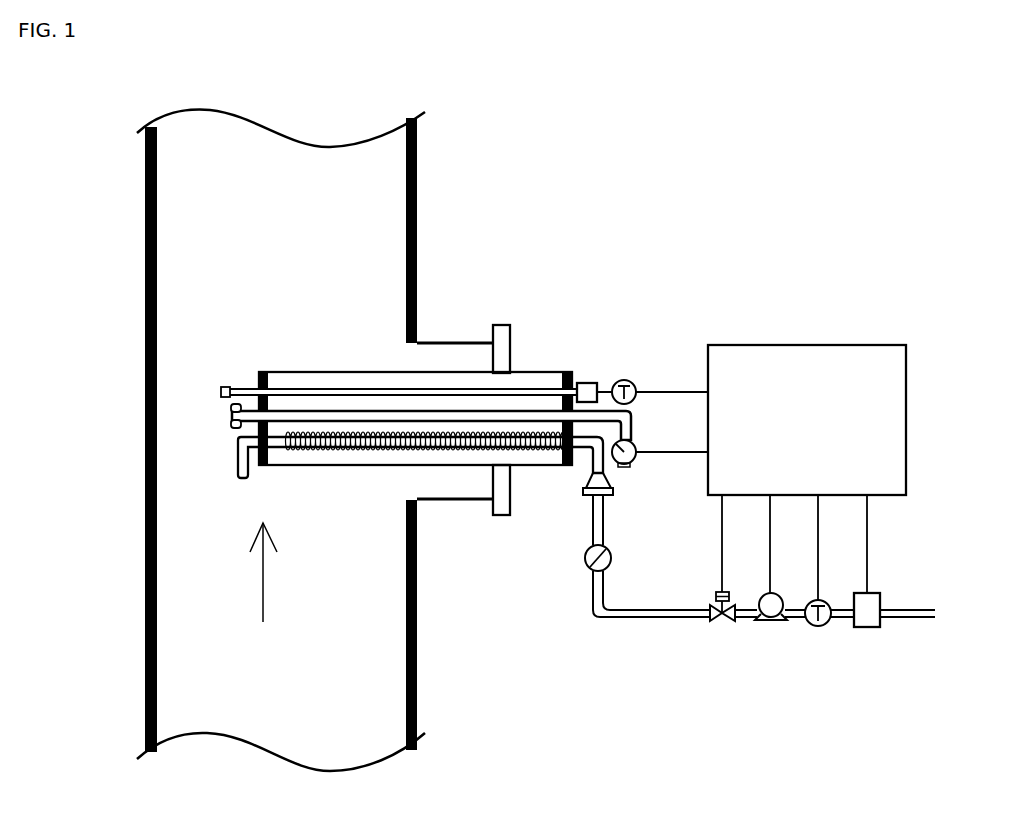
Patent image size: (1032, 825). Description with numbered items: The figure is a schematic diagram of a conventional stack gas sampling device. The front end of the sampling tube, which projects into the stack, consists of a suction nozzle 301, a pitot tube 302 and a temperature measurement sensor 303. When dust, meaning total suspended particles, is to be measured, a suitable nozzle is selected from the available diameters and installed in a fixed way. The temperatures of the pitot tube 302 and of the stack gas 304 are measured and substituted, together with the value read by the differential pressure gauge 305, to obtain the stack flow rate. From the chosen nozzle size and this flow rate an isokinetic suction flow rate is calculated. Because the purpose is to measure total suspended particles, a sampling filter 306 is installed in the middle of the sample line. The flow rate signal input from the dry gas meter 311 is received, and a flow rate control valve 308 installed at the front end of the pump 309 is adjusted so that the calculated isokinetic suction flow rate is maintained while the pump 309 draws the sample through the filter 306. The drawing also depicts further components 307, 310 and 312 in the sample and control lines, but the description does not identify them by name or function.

The suction nozzle 301 is at (242, 478).
The pitot tube 302 is at (235, 425).
The temperature measurement sensor 303 is at (224, 390).
The stack gas 304 is at (624, 380).
The differential pressure gauge 305 is at (634, 462).
The sampling filter 306 is at (584, 490).
The flow meter 307 is at (586, 561).
The flow rate control valve 308 is at (714, 622).
The pump 309 is at (766, 623).
The temperature sensor 310 is at (818, 628).
The dry gas meter 311 is at (866, 628).
The controller 312 is at (770, 345).